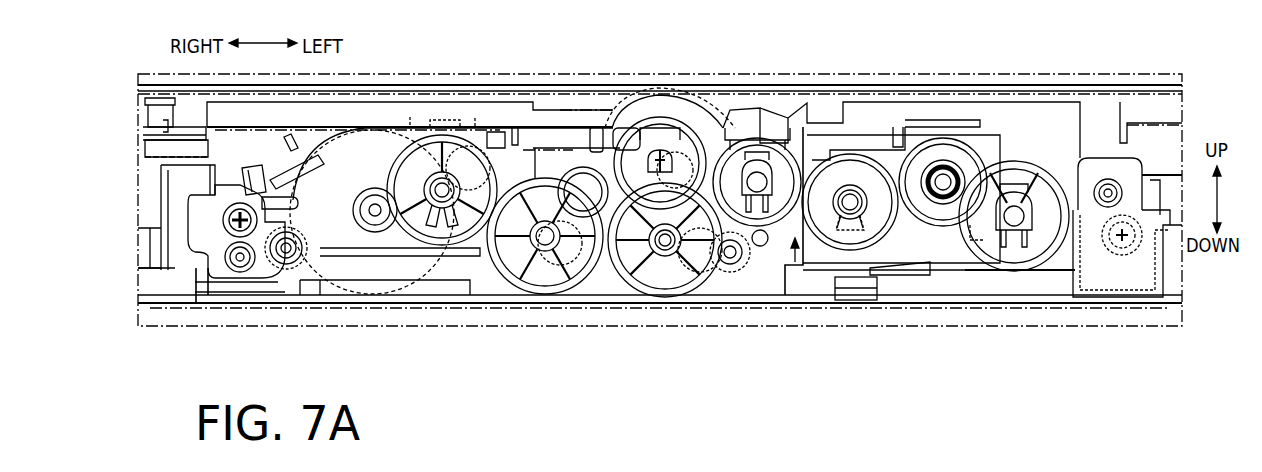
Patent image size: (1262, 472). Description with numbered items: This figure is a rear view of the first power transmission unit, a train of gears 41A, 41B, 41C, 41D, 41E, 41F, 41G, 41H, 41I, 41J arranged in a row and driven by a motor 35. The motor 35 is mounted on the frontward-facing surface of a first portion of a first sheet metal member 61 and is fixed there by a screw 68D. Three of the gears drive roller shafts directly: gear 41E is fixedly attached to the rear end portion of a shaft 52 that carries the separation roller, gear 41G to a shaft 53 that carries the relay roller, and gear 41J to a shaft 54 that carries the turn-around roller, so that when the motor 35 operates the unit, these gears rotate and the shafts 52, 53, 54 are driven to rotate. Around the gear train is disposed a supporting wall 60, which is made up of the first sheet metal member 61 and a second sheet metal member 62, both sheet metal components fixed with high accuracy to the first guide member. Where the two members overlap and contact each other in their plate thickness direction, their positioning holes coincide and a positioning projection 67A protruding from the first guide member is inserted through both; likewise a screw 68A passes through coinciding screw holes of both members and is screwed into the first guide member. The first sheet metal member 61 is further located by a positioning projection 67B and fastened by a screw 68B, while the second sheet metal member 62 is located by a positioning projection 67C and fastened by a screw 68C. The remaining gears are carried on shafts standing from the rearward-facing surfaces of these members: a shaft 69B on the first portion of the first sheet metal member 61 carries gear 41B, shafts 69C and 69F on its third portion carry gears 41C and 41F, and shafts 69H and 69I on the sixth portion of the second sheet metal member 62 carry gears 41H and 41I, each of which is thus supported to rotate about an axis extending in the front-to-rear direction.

The motor 35 is at (370, 270).
The gear 41A is at (375, 205).
The gear 41B is at (442, 142).
The gear 41C is at (535, 180).
The gear 41D is at (583, 170).
The gear 41E is at (658, 126).
The gear 41F is at (687, 184).
The gear 41G is at (752, 138).
The gear 41H is at (848, 157).
The gear 41I is at (943, 136).
The gear 41J is at (1013, 161).
The shaft 52 is at (658, 160).
The shaft 53 is at (758, 183).
The shaft 54 is at (1014, 215).
The supporting wall 60 is at (795, 266).
The first sheet metal member 61 is at (188, 230).
The second sheet metal member 62 is at (903, 235).
The positioning projection 67A is at (760, 246).
The positioning projection 67B is at (240, 262).
The positioning projection 67C is at (1106, 200).
The screw 68A is at (730, 262).
The screw 68B is at (226, 222).
The screw 68C is at (1125, 237).
The screw 68D is at (287, 256).
The shaft 69B is at (442, 196).
The shaft 69C is at (545, 242).
The shaft 69F is at (665, 246).
The shaft 69H is at (850, 208).
The shaft 69I is at (943, 186).